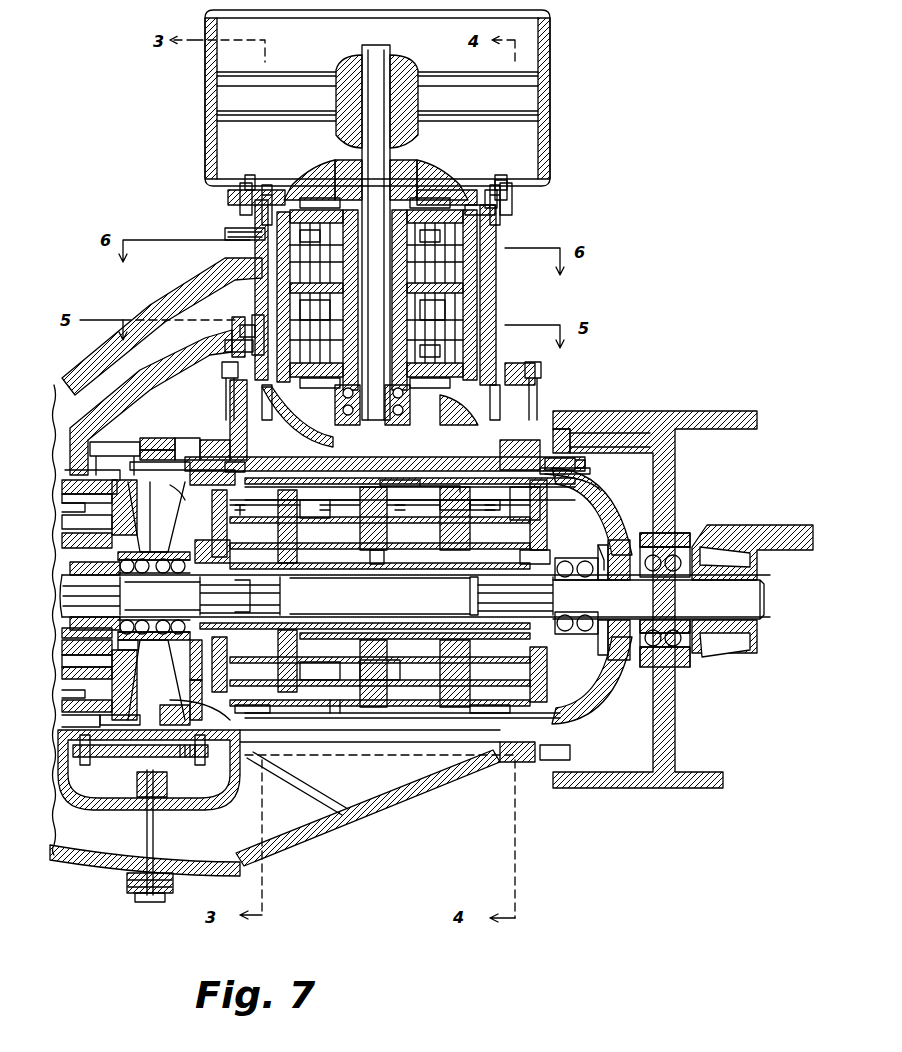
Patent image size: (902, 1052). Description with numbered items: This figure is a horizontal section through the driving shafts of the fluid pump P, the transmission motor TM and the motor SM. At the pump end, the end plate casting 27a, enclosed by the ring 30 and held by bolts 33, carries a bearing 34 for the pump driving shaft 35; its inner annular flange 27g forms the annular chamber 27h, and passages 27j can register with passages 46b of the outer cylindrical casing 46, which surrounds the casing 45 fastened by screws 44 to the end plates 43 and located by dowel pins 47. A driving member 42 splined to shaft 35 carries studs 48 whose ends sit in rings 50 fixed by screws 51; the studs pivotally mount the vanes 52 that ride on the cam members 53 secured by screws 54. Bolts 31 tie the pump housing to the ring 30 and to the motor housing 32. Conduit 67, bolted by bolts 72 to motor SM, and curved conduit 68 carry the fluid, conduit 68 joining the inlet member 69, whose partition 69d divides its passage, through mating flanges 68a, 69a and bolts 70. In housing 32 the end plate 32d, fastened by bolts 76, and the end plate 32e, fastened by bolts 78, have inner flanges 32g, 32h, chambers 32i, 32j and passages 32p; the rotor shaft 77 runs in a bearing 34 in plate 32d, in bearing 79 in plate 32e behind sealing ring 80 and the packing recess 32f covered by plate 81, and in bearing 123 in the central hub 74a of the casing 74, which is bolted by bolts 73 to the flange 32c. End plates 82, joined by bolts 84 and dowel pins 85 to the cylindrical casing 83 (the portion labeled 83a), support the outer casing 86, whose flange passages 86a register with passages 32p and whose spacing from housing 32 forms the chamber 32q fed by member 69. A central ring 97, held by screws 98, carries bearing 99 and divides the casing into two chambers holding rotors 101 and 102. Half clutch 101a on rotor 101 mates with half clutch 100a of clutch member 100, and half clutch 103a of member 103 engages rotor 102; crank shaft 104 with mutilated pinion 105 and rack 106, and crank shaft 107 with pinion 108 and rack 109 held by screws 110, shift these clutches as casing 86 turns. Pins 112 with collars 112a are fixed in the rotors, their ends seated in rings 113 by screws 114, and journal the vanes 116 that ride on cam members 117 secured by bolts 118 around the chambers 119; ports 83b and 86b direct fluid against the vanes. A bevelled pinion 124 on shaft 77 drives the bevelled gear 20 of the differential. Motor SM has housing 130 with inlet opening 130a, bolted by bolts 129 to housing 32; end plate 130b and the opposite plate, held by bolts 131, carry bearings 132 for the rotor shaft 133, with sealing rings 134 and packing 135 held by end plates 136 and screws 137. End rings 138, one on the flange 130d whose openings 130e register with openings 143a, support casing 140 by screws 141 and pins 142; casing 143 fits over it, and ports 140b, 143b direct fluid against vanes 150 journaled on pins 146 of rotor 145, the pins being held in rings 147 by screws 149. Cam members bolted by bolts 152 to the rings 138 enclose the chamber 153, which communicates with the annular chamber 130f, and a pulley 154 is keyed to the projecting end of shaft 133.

The bevelled gear 20 is at (772, 527).
The end plate casting 27a is at (138, 465).
The inner annular flange 27g is at (85, 668).
The annular chamber 27h is at (156, 517).
The passages 27j is at (162, 712).
The ring 30 is at (172, 438).
The headed bolts 31 is at (152, 440).
The housing 32 is at (275, 456).
The flange 32c is at (530, 765).
The end plate 32d is at (140, 756).
The end plate 32e is at (600, 485).
The recess 32f is at (605, 545).
The inner annular flange 32g is at (166, 612).
The inner annular flange 32h is at (575, 510).
The chamber 32i is at (132, 655).
The chamber 32j is at (590, 692).
The passages 32p is at (593, 716).
The chamber 32q is at (415, 720).
The headed bolts 33 is at (135, 784).
The bearing 34 is at (152, 555).
The driving shaft 35 is at (70, 590).
The driving member 42 is at (72, 630).
The end plates 43 is at (115, 510).
The screws 44 is at (89, 480).
The cylindrical casing 45 is at (72, 706).
The cylindrical casing 46 is at (66, 722).
The passages 46b is at (108, 720).
The dowel pins 47 is at (125, 685).
The studs 48 is at (72, 508).
The rings 50 is at (70, 474).
The screws 51 is at (72, 493).
The vanes 52 is at (72, 522).
The cam member 53 is at (75, 652).
The headed screws 54 is at (72, 540).
The conduit 67 is at (165, 292).
The conduit 68 is at (66, 862).
The flange 68a is at (145, 900).
The inlet member 69 is at (275, 860).
The flange 69a is at (155, 903).
The central partition 69d is at (320, 805).
The headed and nutted bolts 70 is at (128, 888).
The headed and nutted bolts 72 is at (238, 228).
The bolts 73 is at (553, 436).
The housing 74 is at (700, 420).
The central hub 74a is at (678, 530).
The bolts 76 is at (178, 440).
The rotor shaft 77 is at (762, 598).
The bolts 78 is at (578, 464).
The bearing 79 is at (582, 560).
The sealing ring 80 is at (614, 540).
The plate 81 is at (615, 560).
The end plates 82 is at (195, 660).
The cylindrical casing 83 is at (477, 489).
The gear 83a is at (255, 714).
The ports 83b is at (447, 489).
The bolts 84 is at (190, 702).
The dowel pins 85 is at (600, 680).
The casing 86 is at (430, 480).
The passages 86a is at (540, 716).
The ports 86b is at (402, 482).
The ring 97 is at (345, 682).
The screws 98 is at (338, 482).
The bearing 99 is at (385, 556).
The clutch member 100 is at (200, 585).
The half clutch 100a is at (272, 562).
The rotor 101 is at (310, 600).
The half clutch 101a is at (265, 590).
The rotor 102 is at (430, 578).
The clutch member 103 is at (553, 594).
The half clutch 103a is at (520, 553).
The crank shaft 104 is at (205, 520).
The mutilated pinion 105 is at (238, 463).
The rack 106 is at (243, 480).
The crank shaft 107 is at (556, 528).
The mutilated pinion 108 is at (560, 478).
The rack 109 is at (410, 452).
The screws 110 is at (515, 485).
The pins 112 is at (435, 522).
The collars 112a is at (290, 712).
The rings 113 is at (556, 682).
The small screws 114 is at (379, 521).
The vanes 116 is at (410, 484).
The cam member 117 is at (350, 548).
The bolts 118 is at (470, 580).
The chamber 119 is at (335, 580).
The bearing 123 is at (670, 580).
The bevelled pinion 124 is at (715, 645).
The bolts 129 is at (222, 370).
The housing member 130 is at (510, 290).
The inlet opening 130a is at (240, 270).
The end plate 130b is at (455, 175).
The annular flange 130d is at (330, 392).
The openings 130e is at (448, 420).
The annular chamber 130f is at (247, 410).
The bolts 131 is at (245, 188).
The bearings 132 is at (420, 200).
The rotor shaft 133 is at (382, 58).
The sealing ring 134 is at (335, 205).
The packing material 135 is at (408, 140).
The end plates 136 is at (340, 185).
The screws 137 is at (442, 200).
The end rings 138 is at (275, 205).
The casing 140 is at (440, 262).
The ports 140b is at (445, 305).
The screws 141 is at (495, 218).
The pins 142 is at (243, 190).
The casing 143 is at (455, 290).
The openings 143a is at (520, 366).
The ports 143b is at (455, 330).
The rotor 145 is at (262, 300).
The pins 146 is at (262, 228).
The rings 147 is at (478, 240).
The small screws 149 is at (500, 180).
The vanes 150 is at (255, 318).
The bolts 152 is at (510, 360).
The chamber 153 is at (372, 410).
The pulley 154 is at (205, 82).